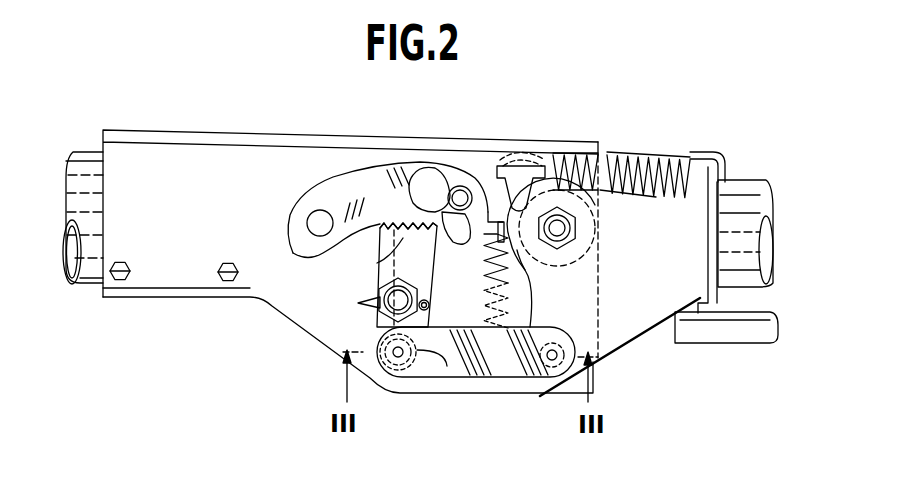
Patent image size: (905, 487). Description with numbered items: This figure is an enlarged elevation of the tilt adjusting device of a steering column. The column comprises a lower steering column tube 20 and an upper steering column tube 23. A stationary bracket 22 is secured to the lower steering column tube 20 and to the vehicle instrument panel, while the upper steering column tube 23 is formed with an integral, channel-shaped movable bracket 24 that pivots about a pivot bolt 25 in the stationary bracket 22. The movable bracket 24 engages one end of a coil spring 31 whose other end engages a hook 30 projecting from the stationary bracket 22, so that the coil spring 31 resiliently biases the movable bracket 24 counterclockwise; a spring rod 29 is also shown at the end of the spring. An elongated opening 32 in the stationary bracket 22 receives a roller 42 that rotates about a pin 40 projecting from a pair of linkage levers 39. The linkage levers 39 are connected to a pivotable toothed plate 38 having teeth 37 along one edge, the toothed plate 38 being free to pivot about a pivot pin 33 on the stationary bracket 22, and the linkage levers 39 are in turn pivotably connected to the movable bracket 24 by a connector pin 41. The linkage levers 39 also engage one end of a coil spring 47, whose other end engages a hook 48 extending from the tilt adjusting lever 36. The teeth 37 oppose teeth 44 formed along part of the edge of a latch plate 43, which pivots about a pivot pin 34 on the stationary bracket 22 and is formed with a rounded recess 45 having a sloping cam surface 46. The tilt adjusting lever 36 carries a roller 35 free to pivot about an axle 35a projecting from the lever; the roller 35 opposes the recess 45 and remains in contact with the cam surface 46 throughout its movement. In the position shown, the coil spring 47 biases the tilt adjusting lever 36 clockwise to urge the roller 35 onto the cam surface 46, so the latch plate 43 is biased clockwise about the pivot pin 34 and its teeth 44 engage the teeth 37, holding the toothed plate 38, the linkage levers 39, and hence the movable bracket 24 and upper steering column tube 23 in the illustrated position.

The lower steering column tube 20 is at (90, 286).
The stationary bracket 22 is at (165, 283).
The upper steering column tube 23 is at (748, 283).
The movable bracket 24 is at (703, 303).
The pivot bolt 25 is at (573, 230).
The spring rod 29 is at (726, 175).
The hook 30 is at (530, 183).
The coil spring 31 is at (660, 155).
The elongated opening 32 is at (412, 362).
The pivot pin 33 is at (377, 322).
The pivot pin 34 is at (314, 220).
The roller 35 is at (458, 187).
The axle 35a is at (480, 183).
The tilt adjusting lever 36 is at (665, 322).
The teeth 37 is at (380, 277).
The toothed plate 38 is at (358, 303).
The linkage levers 39 is at (507, 378).
The pin 40 is at (397, 360).
The connector pin 41 is at (552, 362).
The roller 42 is at (447, 366).
The latch plate 43 is at (343, 190).
The teeth 44 is at (393, 226).
The rounded recess 45 is at (420, 187).
The cam surface 46 is at (440, 208).
The coil spring 47 is at (480, 277).
The hook 48 is at (528, 270).